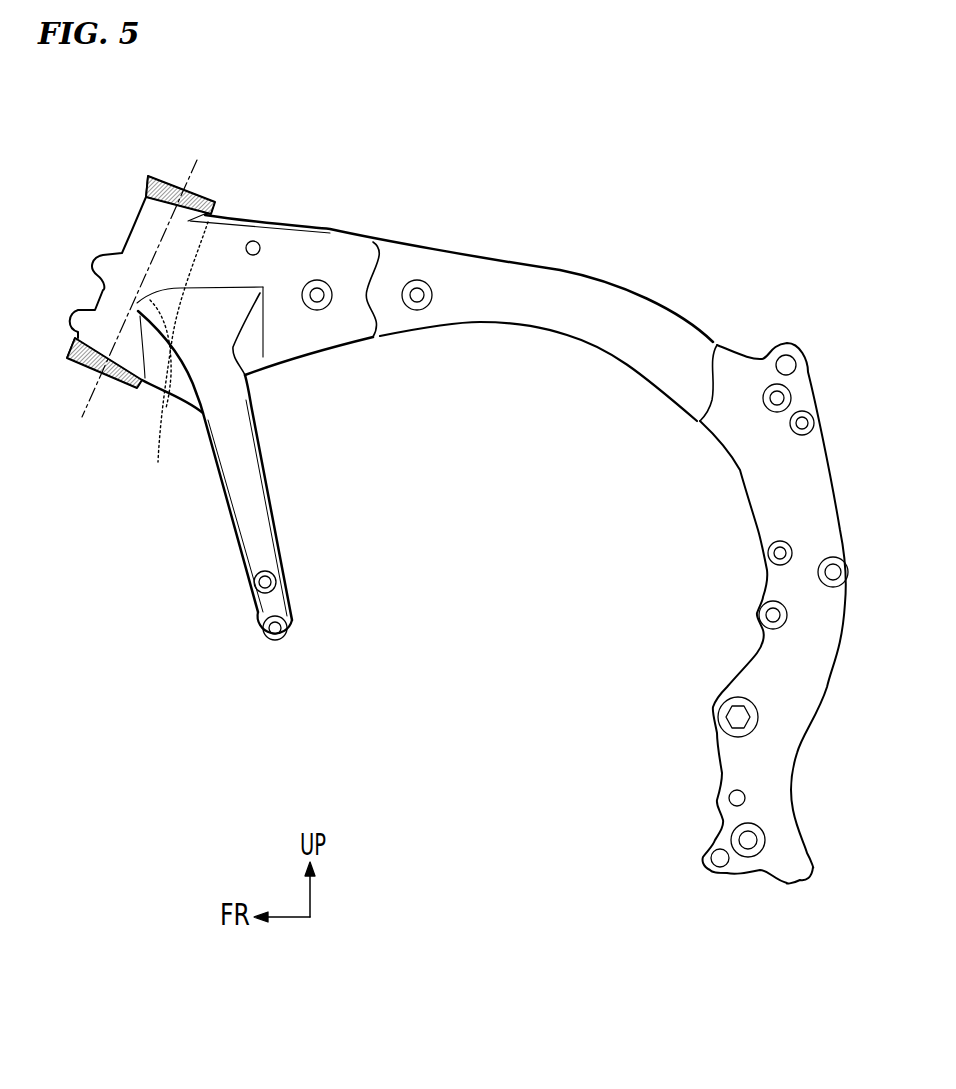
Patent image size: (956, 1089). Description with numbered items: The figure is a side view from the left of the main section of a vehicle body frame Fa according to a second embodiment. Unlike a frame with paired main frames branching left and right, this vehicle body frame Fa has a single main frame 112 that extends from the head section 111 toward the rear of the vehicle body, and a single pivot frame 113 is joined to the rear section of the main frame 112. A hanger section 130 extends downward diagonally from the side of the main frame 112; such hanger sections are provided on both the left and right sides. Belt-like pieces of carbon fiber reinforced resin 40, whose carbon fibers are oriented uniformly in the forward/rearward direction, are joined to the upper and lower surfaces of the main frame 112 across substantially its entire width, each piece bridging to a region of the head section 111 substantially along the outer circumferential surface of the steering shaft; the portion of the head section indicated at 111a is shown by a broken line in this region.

The head section 111 is at (128, 234).
The rear portion of head pipe 111a is at (175, 361).
The main frame 112 is at (357, 252).
The pivot frame 113 is at (780, 665).
The hanger section 130 is at (260, 607).
The carbon fiber reinforced resin 40 is at (244, 220).
The vehicle body frame Fa is at (530, 188).